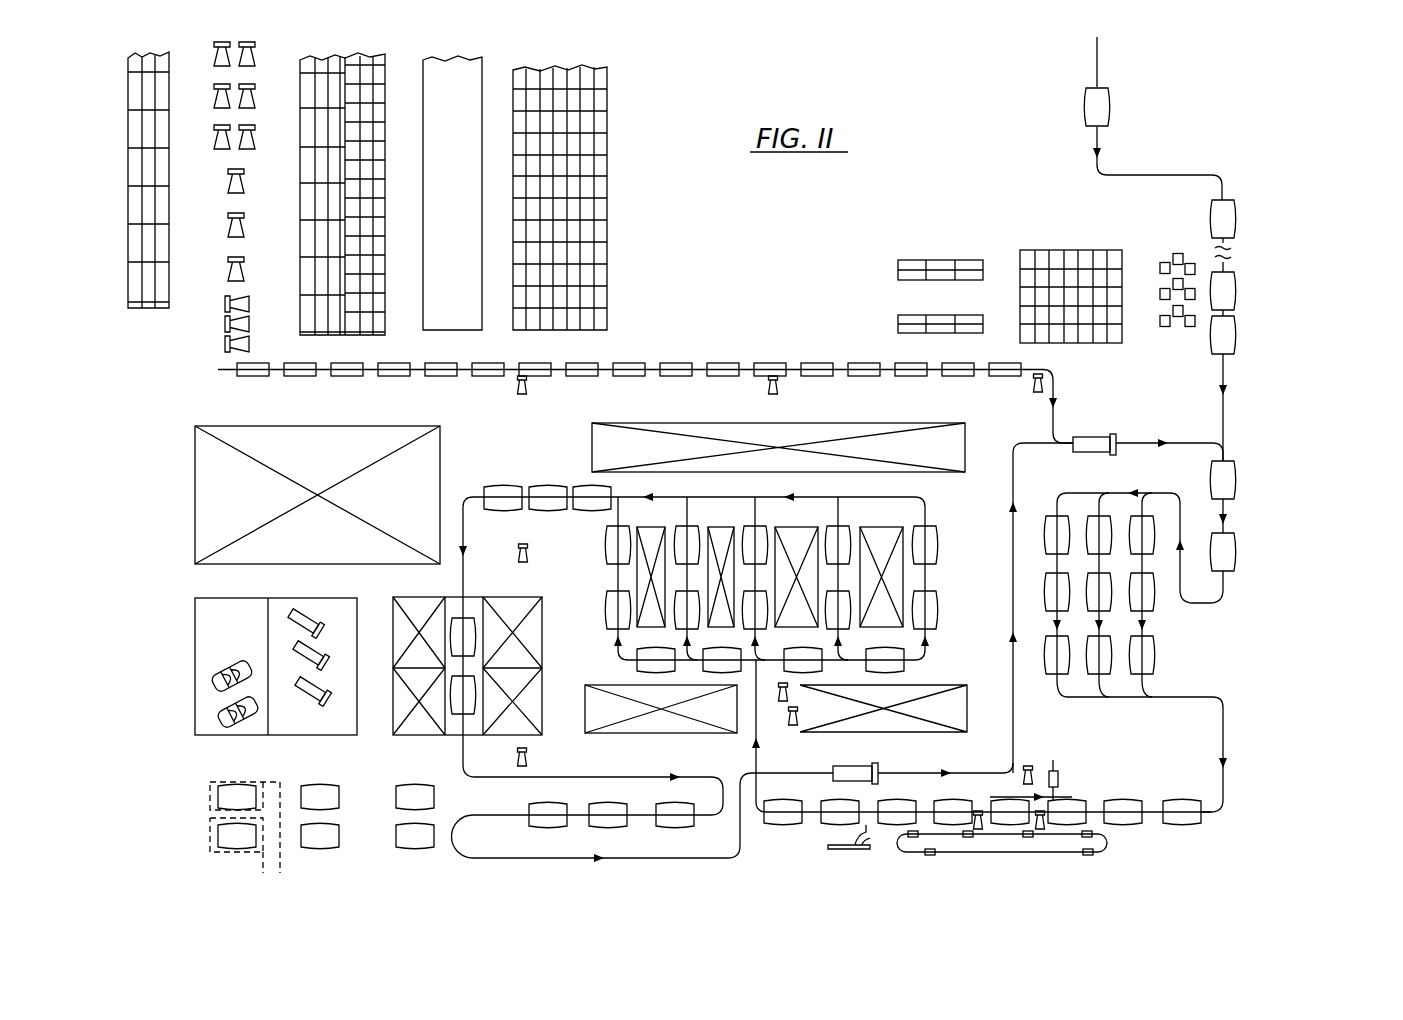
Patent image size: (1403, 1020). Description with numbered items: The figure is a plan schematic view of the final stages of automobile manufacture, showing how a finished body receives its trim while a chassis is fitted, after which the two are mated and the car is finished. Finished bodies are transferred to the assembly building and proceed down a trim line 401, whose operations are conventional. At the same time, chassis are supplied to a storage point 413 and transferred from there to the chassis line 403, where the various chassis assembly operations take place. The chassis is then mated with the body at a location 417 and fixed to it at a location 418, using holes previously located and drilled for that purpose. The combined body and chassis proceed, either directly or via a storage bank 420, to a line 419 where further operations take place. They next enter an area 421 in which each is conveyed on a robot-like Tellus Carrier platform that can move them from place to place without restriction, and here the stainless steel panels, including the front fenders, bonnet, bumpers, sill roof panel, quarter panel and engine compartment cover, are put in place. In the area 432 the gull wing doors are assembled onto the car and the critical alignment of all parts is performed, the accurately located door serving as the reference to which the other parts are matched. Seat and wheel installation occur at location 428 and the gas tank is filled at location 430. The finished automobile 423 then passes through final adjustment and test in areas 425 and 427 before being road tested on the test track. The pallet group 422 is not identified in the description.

The trim line 401 is at (1250, 225).
The chassis line 403 is at (754, 345).
The storage point 413 is at (250, 184).
The location 417 is at (1250, 480).
The location 418 is at (1250, 570).
The line 419 is at (1167, 841).
The storage bank 420 is at (1162, 623).
The area 421 is at (989, 551).
The pallets 422 is at (423, 896).
The finished automobile 423 is at (551, 822).
The area 425 is at (331, 849).
The area 427 is at (250, 852).
The location 428 is at (447, 728).
The location 430 is at (680, 822).
The area 432 is at (545, 511).